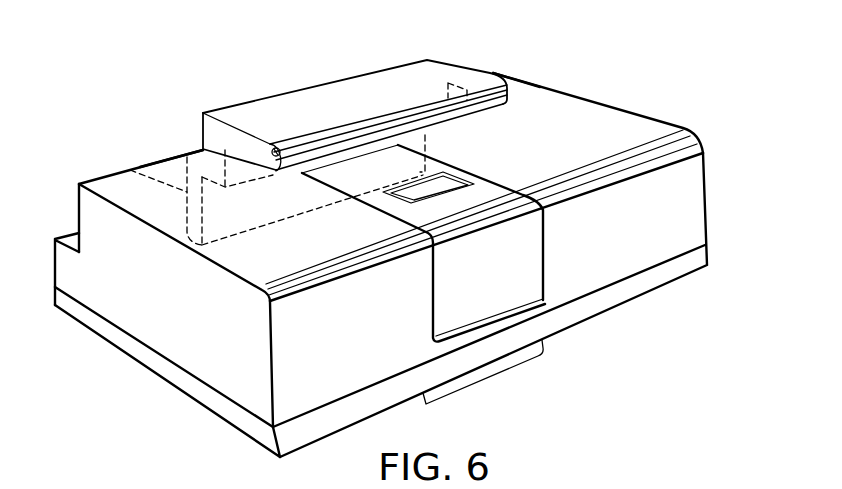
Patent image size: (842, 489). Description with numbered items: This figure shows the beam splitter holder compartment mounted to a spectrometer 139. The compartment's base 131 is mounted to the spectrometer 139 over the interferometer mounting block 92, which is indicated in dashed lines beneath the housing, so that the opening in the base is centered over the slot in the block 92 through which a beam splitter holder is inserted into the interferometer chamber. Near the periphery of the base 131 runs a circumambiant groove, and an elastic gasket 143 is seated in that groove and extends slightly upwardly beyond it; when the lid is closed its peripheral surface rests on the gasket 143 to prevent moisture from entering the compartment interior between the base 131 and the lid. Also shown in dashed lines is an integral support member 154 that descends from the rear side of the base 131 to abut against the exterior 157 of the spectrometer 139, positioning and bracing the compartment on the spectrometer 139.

The spectrometer 139 is at (634, 103).
The base 131 is at (329, 85).
The elastic gasket 143 is at (203, 143).
The exterior of the spectrometer 157 is at (165, 152).
The integral support member 154 is at (130, 170).
The interferometer mounting block 92 is at (425, 151).